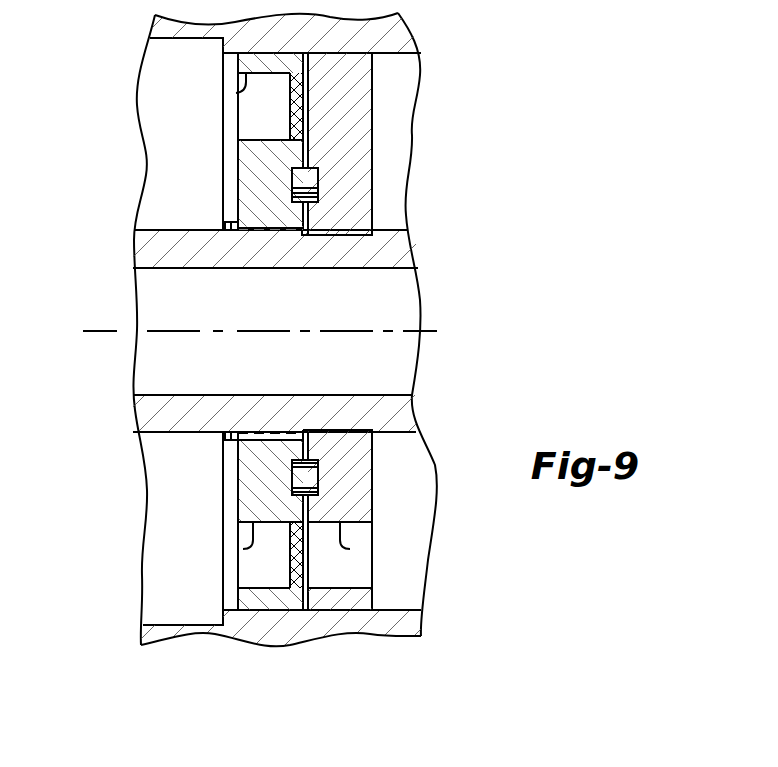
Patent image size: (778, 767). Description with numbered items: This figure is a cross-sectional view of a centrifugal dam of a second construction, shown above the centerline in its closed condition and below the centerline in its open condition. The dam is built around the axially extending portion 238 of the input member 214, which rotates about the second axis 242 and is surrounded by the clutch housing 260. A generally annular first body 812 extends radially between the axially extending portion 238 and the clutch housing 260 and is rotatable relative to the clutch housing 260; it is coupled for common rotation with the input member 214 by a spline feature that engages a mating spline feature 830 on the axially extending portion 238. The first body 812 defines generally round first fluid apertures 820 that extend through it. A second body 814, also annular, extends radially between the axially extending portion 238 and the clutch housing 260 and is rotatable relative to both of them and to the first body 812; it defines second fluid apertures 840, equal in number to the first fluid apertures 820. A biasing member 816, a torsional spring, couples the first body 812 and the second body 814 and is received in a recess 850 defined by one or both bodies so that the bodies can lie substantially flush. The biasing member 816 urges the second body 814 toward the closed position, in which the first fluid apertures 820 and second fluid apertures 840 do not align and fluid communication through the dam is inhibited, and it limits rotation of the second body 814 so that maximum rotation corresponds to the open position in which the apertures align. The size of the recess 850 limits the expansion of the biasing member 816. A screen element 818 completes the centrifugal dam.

The input member 214 is at (402, 257).
The axially extending portion 238 is at (190, 263).
The second axis 242 is at (97, 333).
The clutch housing 260 is at (408, 42).
The first body 812 is at (245, 190).
The second body 814 is at (362, 91).
The biasing member 816 is at (318, 198).
The screen element 818 is at (290, 107).
The first fluid apertures 820 is at (236, 93).
The mating spline feature 830 is at (227, 228).
The second fluid apertures 840 is at (352, 549).
The recess 850 is at (292, 175).